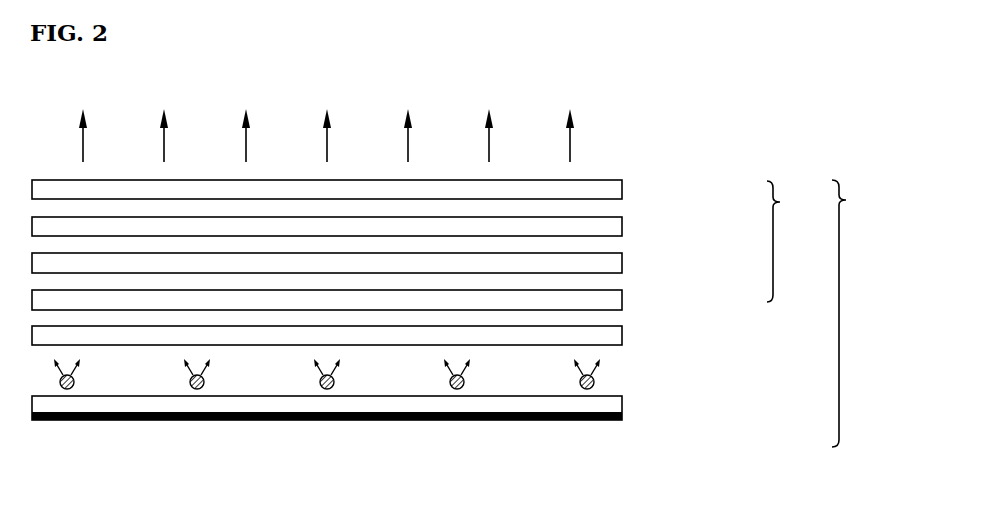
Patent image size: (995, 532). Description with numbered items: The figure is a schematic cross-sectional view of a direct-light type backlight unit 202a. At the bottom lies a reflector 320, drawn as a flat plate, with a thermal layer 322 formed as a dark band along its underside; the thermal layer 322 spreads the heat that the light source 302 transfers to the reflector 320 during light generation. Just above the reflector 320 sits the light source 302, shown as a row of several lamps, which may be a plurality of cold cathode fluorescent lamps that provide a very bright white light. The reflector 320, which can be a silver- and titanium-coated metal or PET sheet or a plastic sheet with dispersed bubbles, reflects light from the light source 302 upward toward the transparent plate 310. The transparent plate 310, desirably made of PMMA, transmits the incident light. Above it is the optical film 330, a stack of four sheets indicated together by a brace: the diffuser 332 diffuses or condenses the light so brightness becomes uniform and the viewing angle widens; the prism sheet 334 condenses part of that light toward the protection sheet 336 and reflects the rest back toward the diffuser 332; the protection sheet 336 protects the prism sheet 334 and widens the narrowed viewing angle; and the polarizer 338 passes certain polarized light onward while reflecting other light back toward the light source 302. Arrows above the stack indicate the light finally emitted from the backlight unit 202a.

The direct-light type of BLU 202a is at (865, 313).
The optical film 330 is at (795, 241).
The polarizer 338 is at (622, 186).
The protection sheet 336 is at (622, 224).
The prism sheet 334 is at (622, 261).
The diffuser 332 is at (622, 298).
The transparent plate 310 is at (622, 333).
The light source 302 is at (594, 378).
The reflector 320 is at (622, 404).
The thermal layer 322 is at (598, 420).